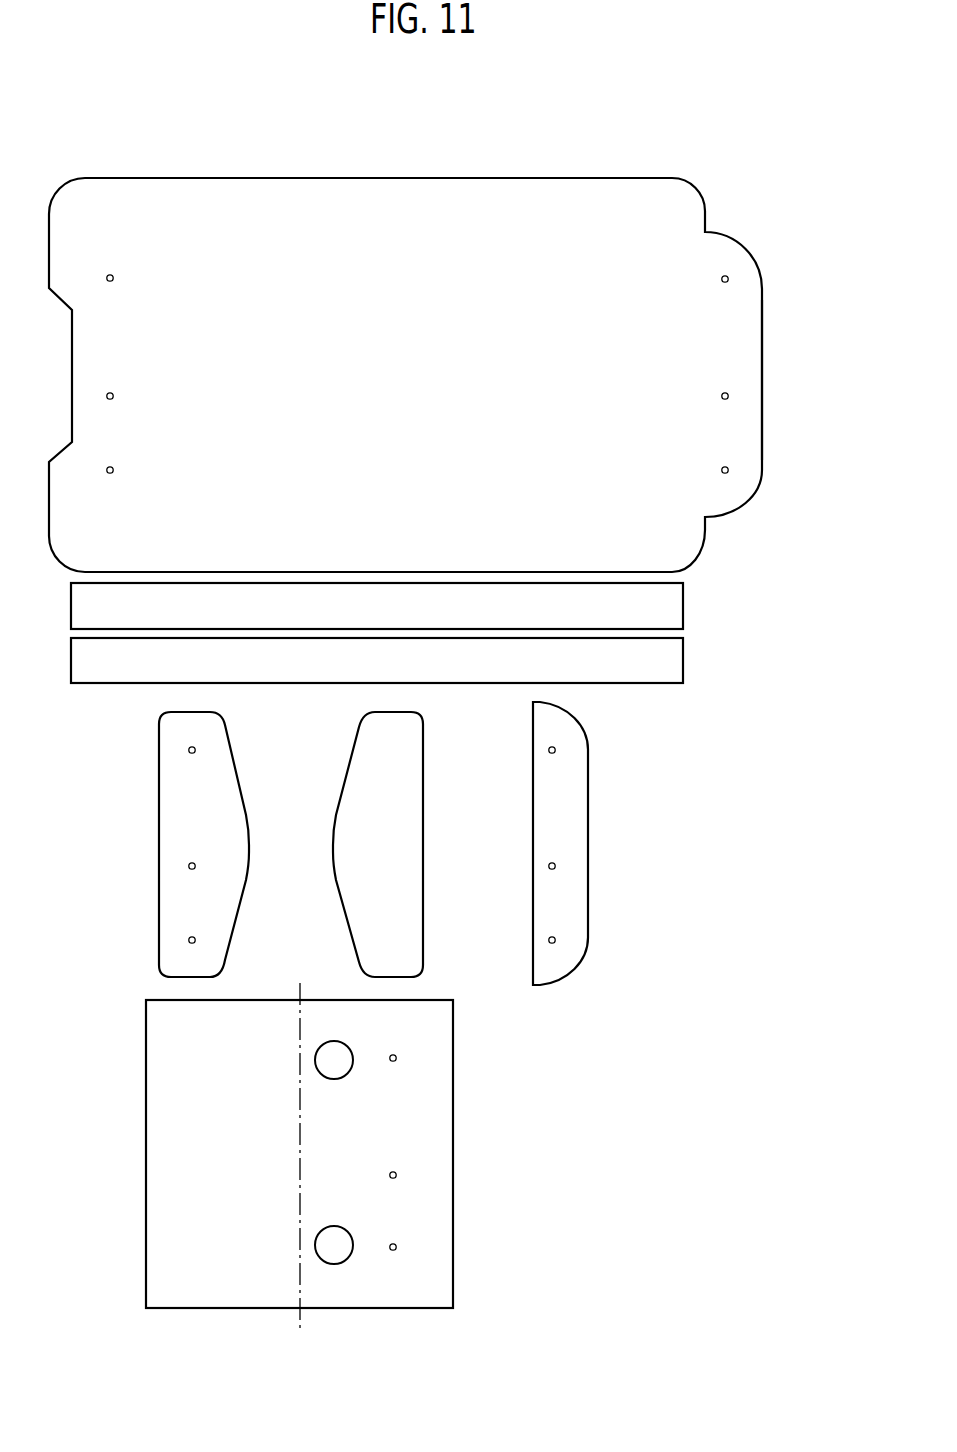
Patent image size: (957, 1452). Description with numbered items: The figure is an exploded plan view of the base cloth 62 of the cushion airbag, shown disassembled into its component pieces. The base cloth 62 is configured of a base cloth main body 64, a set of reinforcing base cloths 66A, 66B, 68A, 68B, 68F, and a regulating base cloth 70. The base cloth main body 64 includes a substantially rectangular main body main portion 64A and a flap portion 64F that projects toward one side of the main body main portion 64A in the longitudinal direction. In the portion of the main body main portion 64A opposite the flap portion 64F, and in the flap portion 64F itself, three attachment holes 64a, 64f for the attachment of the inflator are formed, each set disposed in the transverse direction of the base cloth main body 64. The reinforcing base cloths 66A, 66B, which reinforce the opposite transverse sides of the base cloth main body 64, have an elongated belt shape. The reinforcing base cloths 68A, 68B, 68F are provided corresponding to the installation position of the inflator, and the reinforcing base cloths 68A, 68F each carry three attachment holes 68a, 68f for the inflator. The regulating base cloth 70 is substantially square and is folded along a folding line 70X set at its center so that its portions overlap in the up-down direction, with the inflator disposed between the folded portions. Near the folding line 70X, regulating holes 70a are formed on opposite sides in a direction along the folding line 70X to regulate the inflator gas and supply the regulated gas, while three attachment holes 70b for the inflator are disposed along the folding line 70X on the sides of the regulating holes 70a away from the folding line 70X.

The base cloth 62 is at (483, 160).
The base cloth main body 64 is at (371, 177).
The main body main portion 64A is at (303, 195).
The flap portion 64F is at (752, 312).
The attachment holes 64a is at (113, 278).
The attachment holes 64f is at (720, 283).
The reinforcing base cloth 66A is at (683, 603).
The reinforcing base cloth 66B is at (683, 660).
The reinforcing base cloth 68A is at (158, 725).
The reinforcing base cloth 68B is at (335, 740).
The reinforcing base cloth 68F is at (522, 727).
The attachment holes 68a is at (195, 751).
The attachment holes 68f is at (555, 751).
The regulating base cloth 70 is at (478, 1045).
The folding line 70X is at (297, 1263).
The regulating holes 70a is at (334, 1079).
The attachment holes 70b is at (396, 1060).